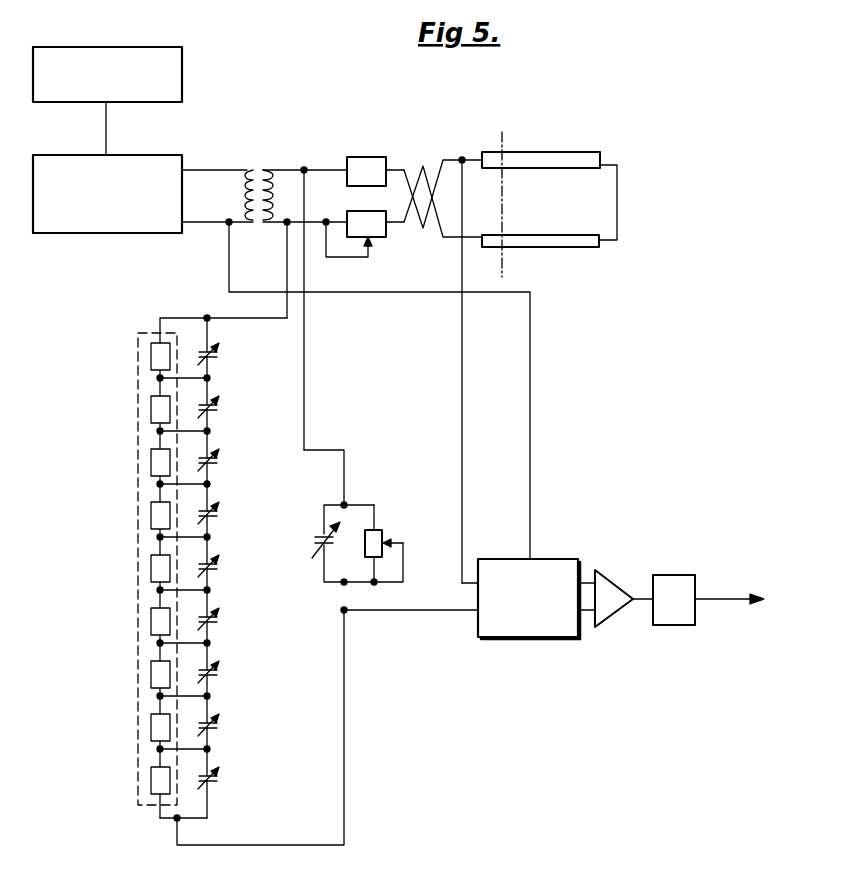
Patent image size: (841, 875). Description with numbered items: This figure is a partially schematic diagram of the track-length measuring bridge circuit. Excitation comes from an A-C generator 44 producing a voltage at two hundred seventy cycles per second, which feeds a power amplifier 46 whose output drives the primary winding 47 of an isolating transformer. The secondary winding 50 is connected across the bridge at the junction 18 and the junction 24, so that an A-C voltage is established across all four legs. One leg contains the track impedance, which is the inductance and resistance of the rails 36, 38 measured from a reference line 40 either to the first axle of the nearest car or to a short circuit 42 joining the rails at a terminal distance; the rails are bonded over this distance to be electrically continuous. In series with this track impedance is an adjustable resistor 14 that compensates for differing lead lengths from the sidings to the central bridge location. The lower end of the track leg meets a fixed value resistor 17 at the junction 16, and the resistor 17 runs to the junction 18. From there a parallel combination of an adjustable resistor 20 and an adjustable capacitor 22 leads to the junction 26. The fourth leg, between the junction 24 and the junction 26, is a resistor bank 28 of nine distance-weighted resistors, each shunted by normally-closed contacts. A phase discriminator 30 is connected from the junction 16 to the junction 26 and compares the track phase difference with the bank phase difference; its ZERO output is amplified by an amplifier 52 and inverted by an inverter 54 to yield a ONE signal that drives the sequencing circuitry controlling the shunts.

The A-C generator 44 is at (183, 80).
The power amplifier 46 is at (167, 157).
The primary winding 47 is at (240, 192).
The secondary winding 50 is at (282, 195).
The junction 24 is at (283, 232).
The junction 18 is at (304, 166).
The fixed value resistor 17 is at (378, 157).
The adjustable resistor 14 is at (381, 238).
The junction 16 is at (463, 156).
The reference line 40 is at (505, 143).
The track rail 36 is at (581, 155).
The track rail 38 is at (580, 247).
The short circuit 42 is at (617, 215).
The resistor bank 28 is at (147, 332).
The adjustable capacitor 22 is at (320, 537).
The adjustable resistor 20 is at (382, 532).
The junction 26 is at (346, 614).
The phase discriminator 30 is at (557, 558).
The amplifier 52 is at (612, 582).
The inverter 54 is at (680, 575).